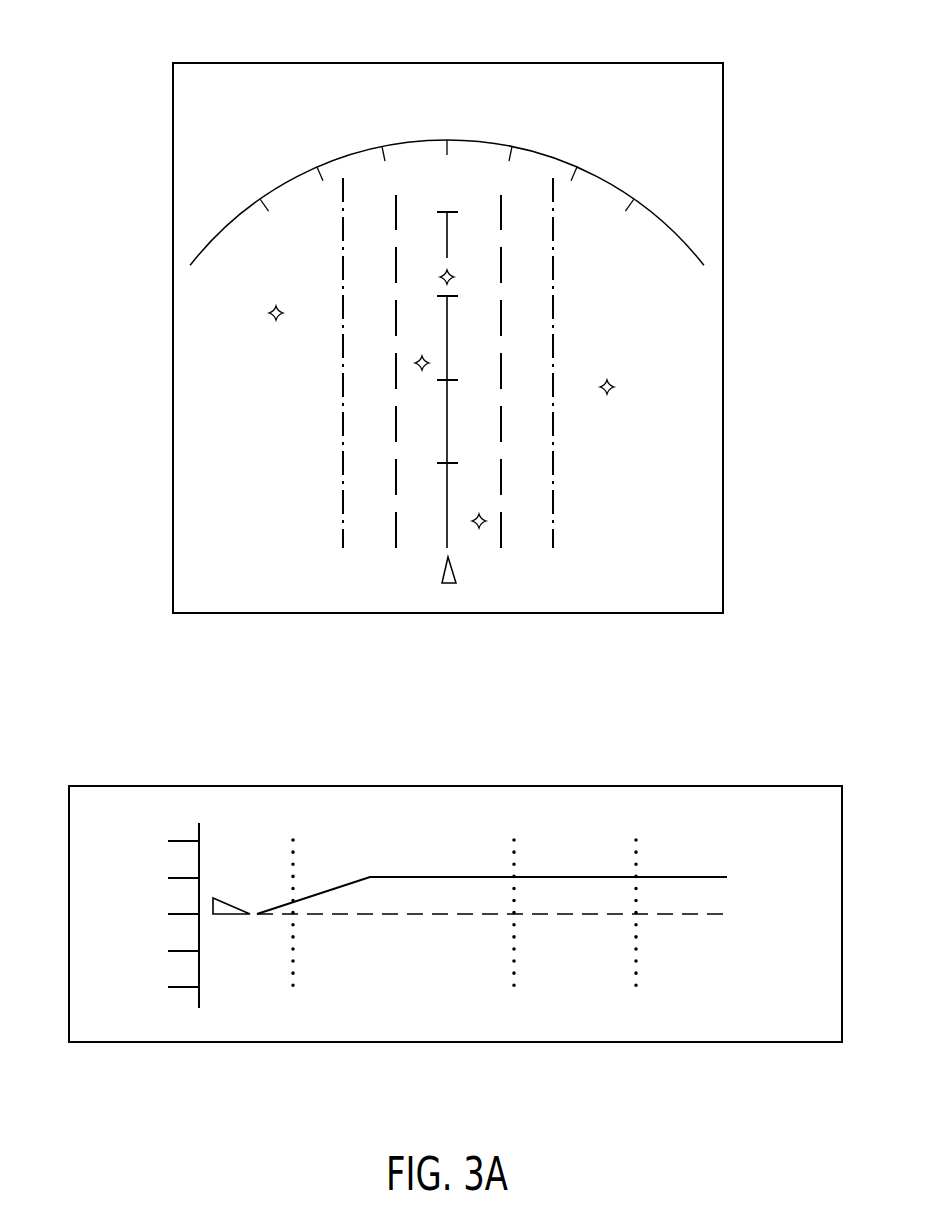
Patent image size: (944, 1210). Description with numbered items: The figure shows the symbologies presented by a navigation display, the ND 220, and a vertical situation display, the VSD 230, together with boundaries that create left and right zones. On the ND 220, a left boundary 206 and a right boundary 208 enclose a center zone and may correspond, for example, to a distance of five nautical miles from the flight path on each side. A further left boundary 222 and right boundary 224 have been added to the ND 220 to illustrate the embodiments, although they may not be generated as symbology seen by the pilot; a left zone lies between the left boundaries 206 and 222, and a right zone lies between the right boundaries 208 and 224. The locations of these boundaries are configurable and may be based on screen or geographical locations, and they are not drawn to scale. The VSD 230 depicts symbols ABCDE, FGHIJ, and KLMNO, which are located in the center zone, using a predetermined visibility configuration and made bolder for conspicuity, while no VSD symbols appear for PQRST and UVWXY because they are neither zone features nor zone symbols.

The ND 220 is at (447, 52).
The VSD 230 is at (447, 775).
The left boundary 206 is at (382, 204).
The right boundary 208 is at (513, 204).
The left boundary 222 is at (332, 463).
The right boundary 224 is at (564, 463).